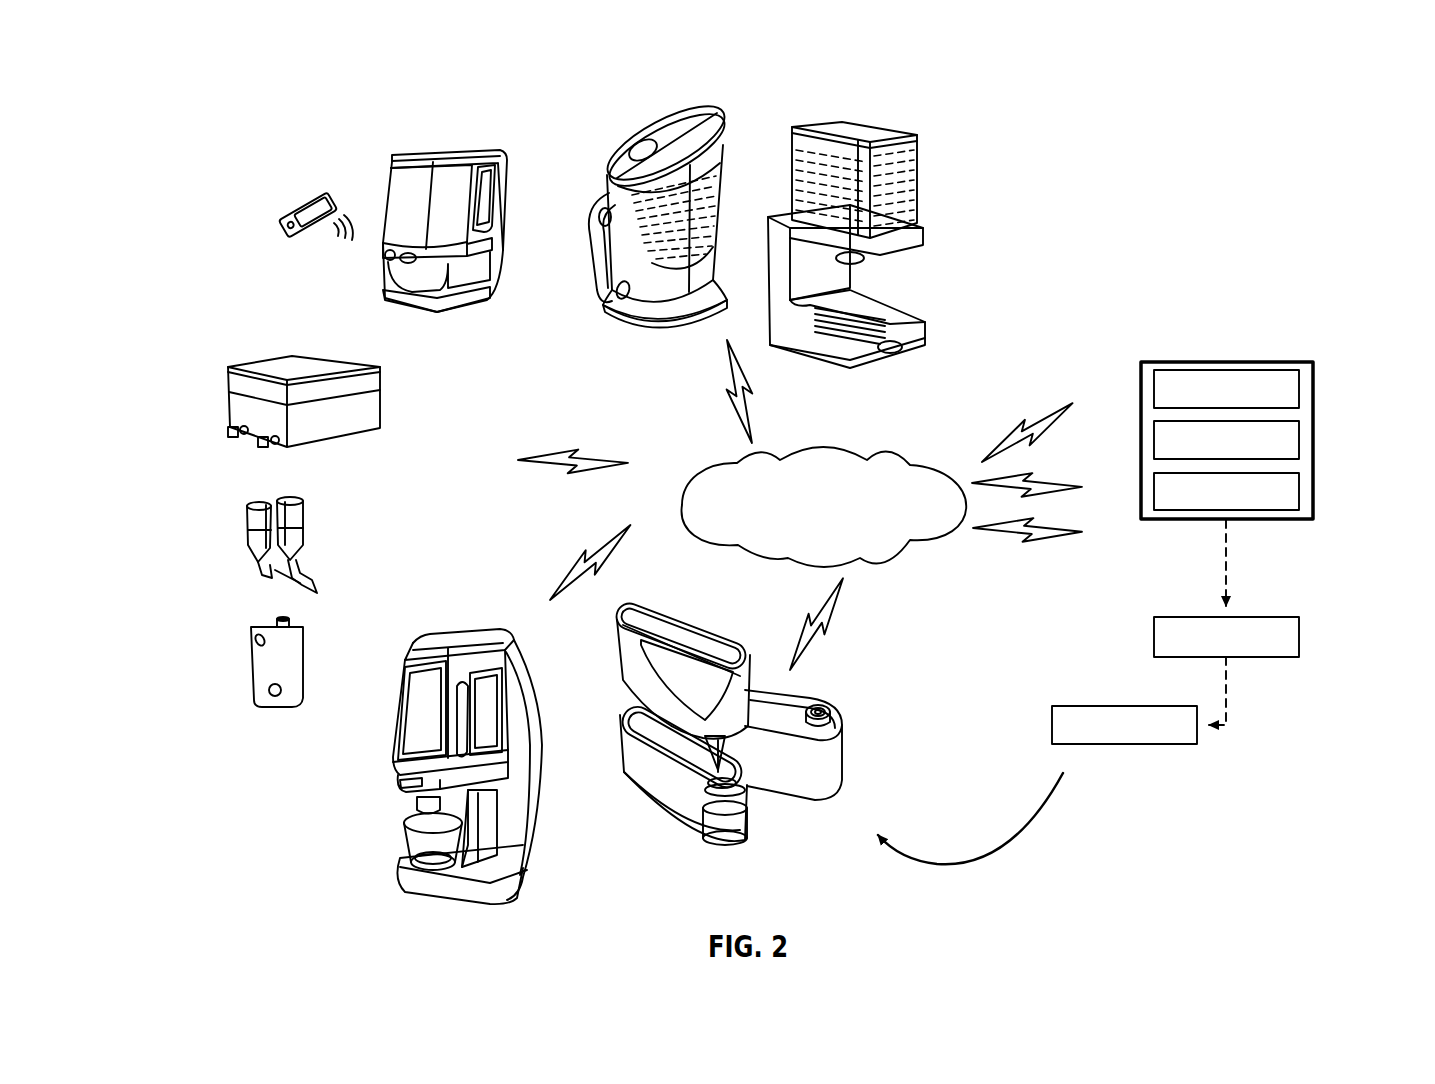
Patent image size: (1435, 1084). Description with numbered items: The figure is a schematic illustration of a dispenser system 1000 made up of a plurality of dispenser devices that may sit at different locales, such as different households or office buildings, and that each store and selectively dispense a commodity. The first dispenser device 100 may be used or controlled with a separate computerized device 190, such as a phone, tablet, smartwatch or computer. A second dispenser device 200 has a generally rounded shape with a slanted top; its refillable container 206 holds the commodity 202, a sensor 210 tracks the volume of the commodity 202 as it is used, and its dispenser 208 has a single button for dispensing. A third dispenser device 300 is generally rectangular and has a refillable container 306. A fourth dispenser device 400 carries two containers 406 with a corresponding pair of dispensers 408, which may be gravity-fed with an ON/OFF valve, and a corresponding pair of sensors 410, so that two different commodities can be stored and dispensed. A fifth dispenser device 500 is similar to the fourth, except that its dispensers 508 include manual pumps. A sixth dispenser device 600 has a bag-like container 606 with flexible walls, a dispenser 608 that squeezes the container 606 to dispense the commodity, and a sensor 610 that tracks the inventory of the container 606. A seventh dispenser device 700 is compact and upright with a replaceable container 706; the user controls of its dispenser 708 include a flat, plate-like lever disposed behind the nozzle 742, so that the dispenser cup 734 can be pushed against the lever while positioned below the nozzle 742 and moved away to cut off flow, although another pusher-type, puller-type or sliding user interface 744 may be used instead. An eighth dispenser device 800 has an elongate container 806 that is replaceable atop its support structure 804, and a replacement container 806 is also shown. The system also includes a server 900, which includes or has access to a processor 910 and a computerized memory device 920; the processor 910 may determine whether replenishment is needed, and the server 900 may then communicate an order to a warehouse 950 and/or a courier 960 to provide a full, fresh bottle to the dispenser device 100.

The dispenser system 1000 is at (1235, 108).
The dispenser device 100 is at (398, 140).
The computerized device 190 is at (292, 200).
The second dispenser device 200 is at (660, 195).
The commodity 202 is at (705, 163).
The container 206 is at (727, 148).
The dispenser 208 is at (605, 207).
The sensor 210 is at (652, 143).
The third dispenser device 300 is at (880, 205).
The container 306 is at (917, 163).
The fourth dispenser device 400 is at (296, 368).
The containers 406 is at (243, 400).
The dispensers 408 is at (233, 430).
The sensors 410 is at (330, 367).
The fifth dispenser device 500 is at (263, 526).
The dispensers 508 is at (297, 557).
The sixth dispenser device 600 is at (254, 651).
The container 606 is at (258, 682).
The dispenser 608 is at (289, 622).
The sensor 610 is at (257, 630).
The seventh dispenser device 700 is at (457, 734).
The replaceable container 706 is at (423, 745).
The dispenser 708 is at (484, 842).
The dispenser cup 734 is at (407, 843).
The nozzle 742 is at (417, 800).
The user interface 744 is at (472, 838).
The eighth dispenser device 800 is at (708, 716).
The support structure 804 is at (633, 760).
The container 806 is at (685, 633).
The server 900 is at (1302, 389).
The processor 910 is at (1302, 440).
The computerized memory device 920 is at (1302, 490).
The warehouse 950 is at (1198, 617).
The courier 960 is at (1093, 706).